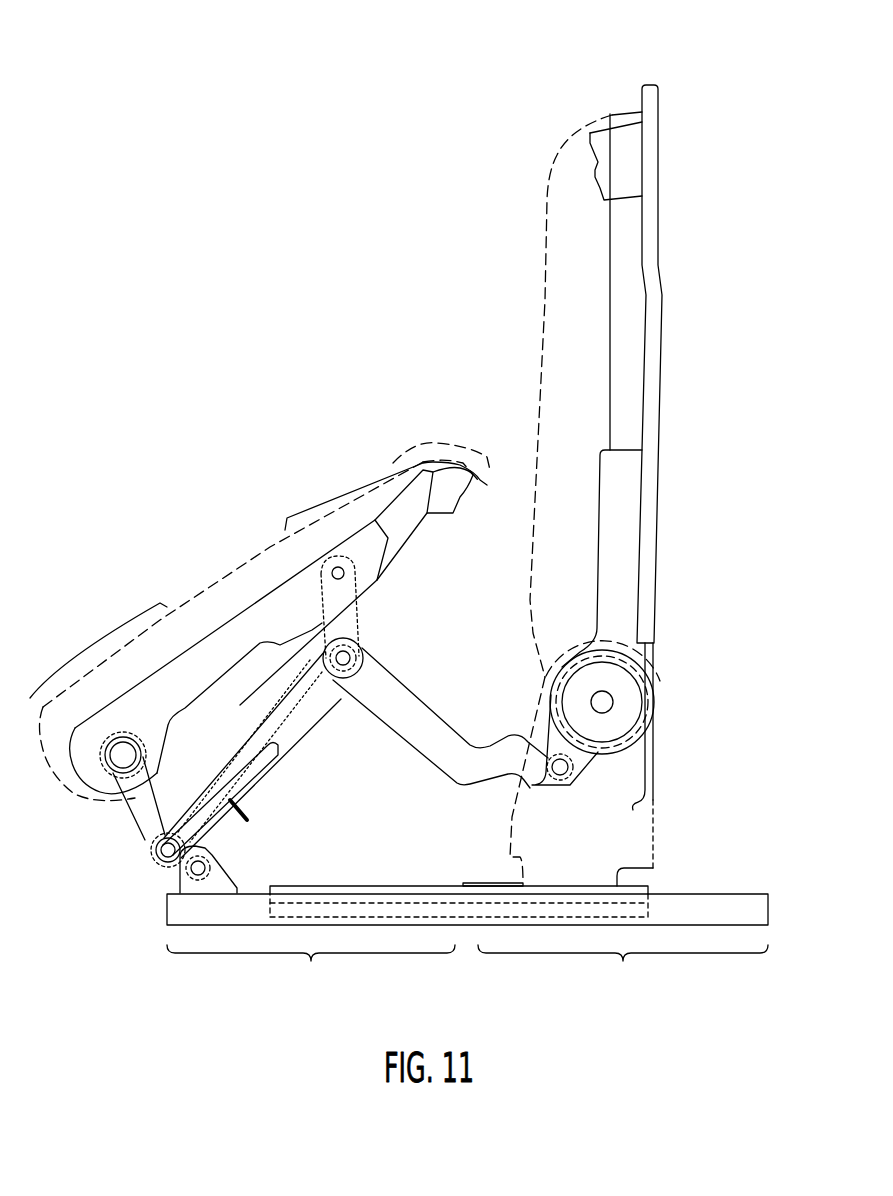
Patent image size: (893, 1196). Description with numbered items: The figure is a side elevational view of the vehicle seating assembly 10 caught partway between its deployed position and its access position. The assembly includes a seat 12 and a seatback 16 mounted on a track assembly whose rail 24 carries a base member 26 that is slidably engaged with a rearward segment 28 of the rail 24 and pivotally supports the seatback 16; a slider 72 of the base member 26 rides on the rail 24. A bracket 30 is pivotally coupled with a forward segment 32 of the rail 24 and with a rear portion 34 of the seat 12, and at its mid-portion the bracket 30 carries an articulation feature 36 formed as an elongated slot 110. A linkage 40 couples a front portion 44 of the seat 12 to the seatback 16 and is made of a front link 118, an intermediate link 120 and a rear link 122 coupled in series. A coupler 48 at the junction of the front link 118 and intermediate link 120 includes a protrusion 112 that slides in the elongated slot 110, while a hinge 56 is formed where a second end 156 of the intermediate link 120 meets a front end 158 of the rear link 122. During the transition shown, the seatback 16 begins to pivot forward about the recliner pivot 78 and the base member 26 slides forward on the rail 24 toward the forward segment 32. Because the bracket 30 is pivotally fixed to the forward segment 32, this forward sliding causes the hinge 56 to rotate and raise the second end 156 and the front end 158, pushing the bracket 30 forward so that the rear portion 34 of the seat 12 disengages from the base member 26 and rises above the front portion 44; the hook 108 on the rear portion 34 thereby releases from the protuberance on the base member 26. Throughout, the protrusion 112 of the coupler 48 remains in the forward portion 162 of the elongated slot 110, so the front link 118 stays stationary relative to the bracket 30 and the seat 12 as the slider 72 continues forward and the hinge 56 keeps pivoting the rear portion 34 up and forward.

The vehicle seating assembly 10 is at (186, 291).
The seat 12 is at (198, 584).
The seatback 16 is at (539, 290).
The rail 24 is at (175, 912).
The base member 26 is at (625, 838).
The rearward segment 28 is at (623, 972).
The bracket 30 is at (272, 690).
The forward segment 32 is at (311, 972).
The rear portion 34 is at (370, 468).
The articulation feature 36 is at (250, 818).
The linkage 40 is at (414, 692).
The front portion 44 is at (88, 650).
The coupler 48 is at (155, 843).
The hinge 56 is at (349, 652).
The slider 72 is at (477, 888).
The recliner pivot 78 is at (628, 707).
The hook 108 is at (460, 494).
The elongated slot 110 is at (252, 778).
The protrusion 112 is at (150, 856).
The front link 118 is at (140, 807).
The intermediate link 120 is at (215, 777).
The rear link 122 is at (440, 745).
The second end 156 is at (288, 684).
The front end 158 is at (375, 678).
The forward portion 162 is at (217, 837).